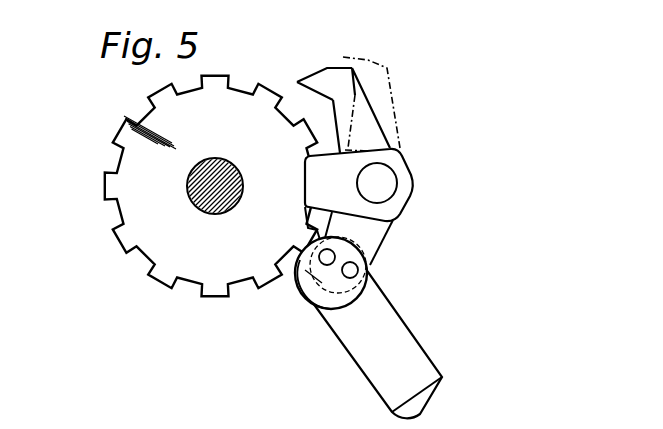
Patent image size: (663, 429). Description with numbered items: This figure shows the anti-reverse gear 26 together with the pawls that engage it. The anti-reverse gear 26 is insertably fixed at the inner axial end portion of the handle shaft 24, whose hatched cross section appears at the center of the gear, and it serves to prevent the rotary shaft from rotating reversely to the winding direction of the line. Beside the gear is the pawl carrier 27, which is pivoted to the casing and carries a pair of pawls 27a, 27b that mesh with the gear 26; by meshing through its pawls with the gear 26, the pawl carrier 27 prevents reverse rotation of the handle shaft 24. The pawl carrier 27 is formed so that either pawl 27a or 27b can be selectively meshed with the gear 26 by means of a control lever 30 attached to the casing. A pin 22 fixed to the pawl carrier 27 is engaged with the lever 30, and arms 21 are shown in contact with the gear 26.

The arms 21 is at (400, 193).
The pin 22 is at (368, 265).
The handle shaft 24 is at (200, 197).
The anti-reverse gear 26 is at (197, 277).
The pawl carrier 27 is at (368, 122).
The pawl 27a is at (307, 292).
The pawl 27b is at (318, 80).
The control lever 30 is at (410, 350).